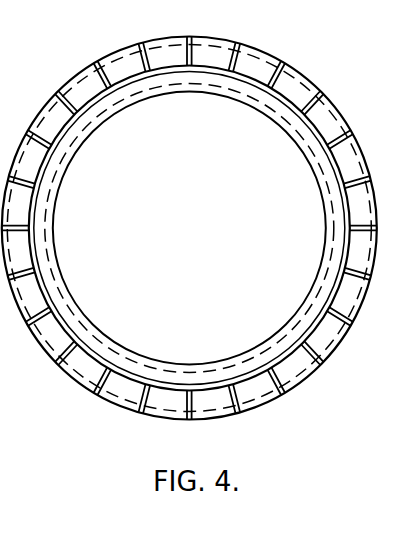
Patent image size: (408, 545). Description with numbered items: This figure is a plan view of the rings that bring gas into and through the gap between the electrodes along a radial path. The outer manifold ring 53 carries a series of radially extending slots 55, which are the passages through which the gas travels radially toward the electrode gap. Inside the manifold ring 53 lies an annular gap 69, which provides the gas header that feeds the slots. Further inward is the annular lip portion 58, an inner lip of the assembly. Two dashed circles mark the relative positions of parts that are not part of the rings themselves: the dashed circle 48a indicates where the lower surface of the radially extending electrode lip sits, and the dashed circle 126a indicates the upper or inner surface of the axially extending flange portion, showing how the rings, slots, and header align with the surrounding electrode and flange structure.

The manifold ring 53 is at (215, 50).
The radially extending slots 55 is at (132, 58).
The annular lip portion 58 is at (72, 297).
The circle indicating lower surface of radially extending electrode lip 48a is at (232, 363).
The annular gap 69 is at (320, 337).
The circle indicating upper or inner surface of axially extending flange portion 126a is at (274, 397).